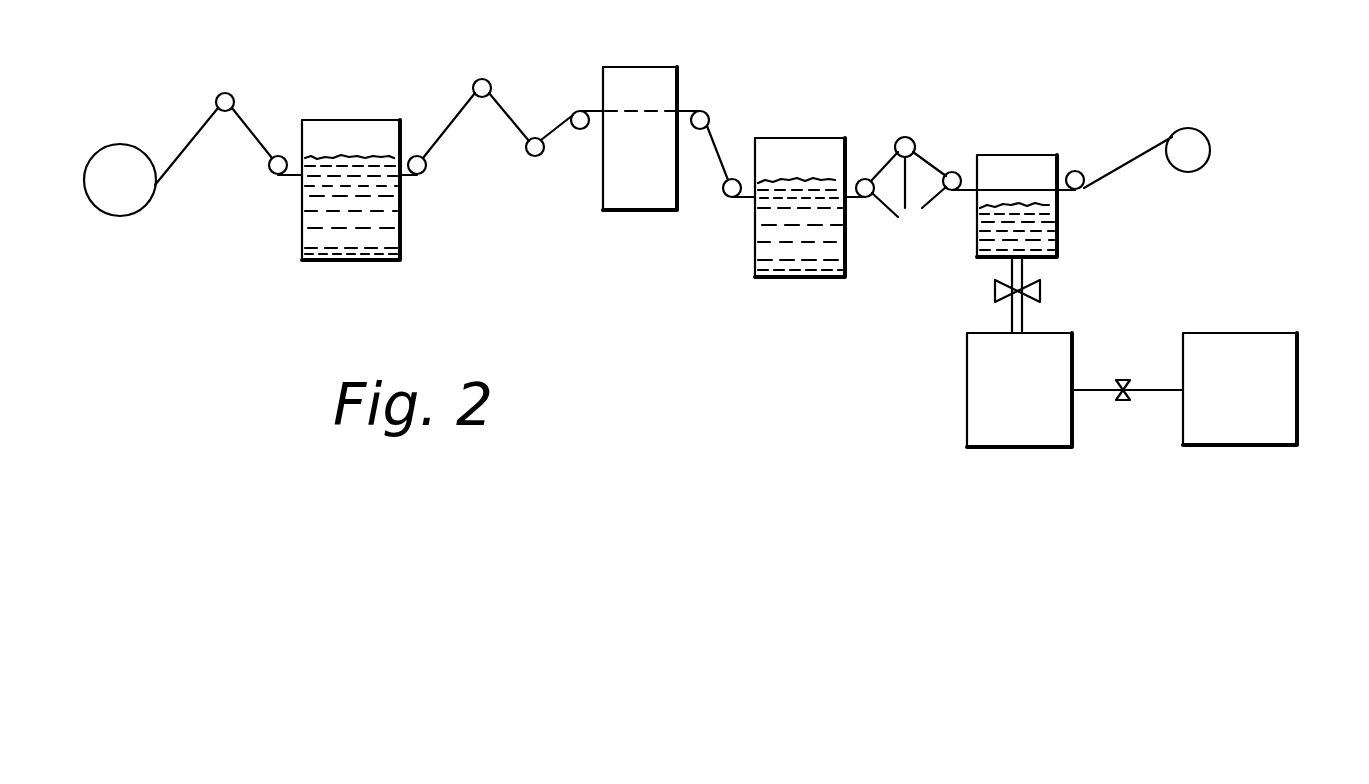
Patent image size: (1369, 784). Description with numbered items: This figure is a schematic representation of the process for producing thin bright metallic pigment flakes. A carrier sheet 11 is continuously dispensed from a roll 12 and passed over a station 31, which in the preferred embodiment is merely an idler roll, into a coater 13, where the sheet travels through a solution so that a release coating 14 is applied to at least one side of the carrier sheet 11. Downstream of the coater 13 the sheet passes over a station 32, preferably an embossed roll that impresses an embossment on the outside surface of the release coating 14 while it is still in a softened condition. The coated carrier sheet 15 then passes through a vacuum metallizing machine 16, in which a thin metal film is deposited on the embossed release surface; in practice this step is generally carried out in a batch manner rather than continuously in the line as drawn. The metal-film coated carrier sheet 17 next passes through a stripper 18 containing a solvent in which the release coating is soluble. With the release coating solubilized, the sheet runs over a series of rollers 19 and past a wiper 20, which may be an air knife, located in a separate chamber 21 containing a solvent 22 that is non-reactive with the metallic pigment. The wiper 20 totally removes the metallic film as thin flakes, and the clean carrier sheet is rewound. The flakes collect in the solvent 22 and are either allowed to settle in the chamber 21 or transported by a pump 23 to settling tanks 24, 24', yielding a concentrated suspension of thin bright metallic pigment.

The carrier sheet 11 is at (192, 137).
The roll 12 is at (135, 215).
The coater 13 is at (350, 262).
The release coating 14 is at (388, 219).
The coated carrier sheet 15 is at (452, 122).
The vacuum metallizing machine 16 is at (637, 197).
The metal-film coated carrier sheet 17 is at (720, 178).
The stripper 18 is at (800, 270).
The rollers 19 is at (908, 193).
The wiper 20 is at (1017, 190).
The chamber 21 is at (975, 235).
The solvent 22 is at (1040, 238).
The pump 23 is at (1042, 293).
The settling tank 24 is at (976, 390).
The settling tank 24' is at (1271, 389).
The station 31 is at (231, 93).
The station 32 is at (486, 80).